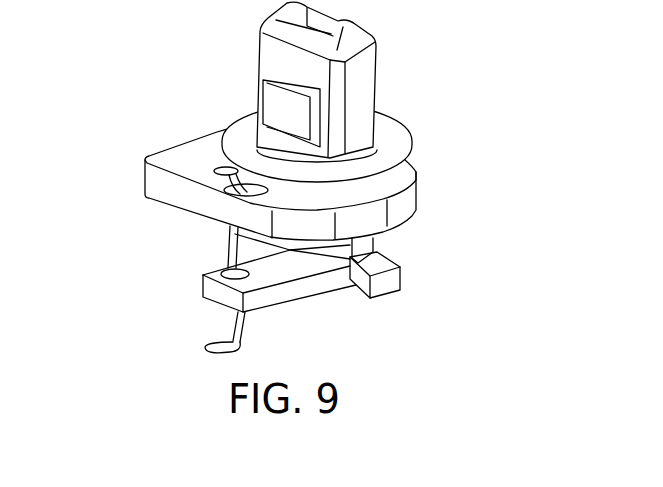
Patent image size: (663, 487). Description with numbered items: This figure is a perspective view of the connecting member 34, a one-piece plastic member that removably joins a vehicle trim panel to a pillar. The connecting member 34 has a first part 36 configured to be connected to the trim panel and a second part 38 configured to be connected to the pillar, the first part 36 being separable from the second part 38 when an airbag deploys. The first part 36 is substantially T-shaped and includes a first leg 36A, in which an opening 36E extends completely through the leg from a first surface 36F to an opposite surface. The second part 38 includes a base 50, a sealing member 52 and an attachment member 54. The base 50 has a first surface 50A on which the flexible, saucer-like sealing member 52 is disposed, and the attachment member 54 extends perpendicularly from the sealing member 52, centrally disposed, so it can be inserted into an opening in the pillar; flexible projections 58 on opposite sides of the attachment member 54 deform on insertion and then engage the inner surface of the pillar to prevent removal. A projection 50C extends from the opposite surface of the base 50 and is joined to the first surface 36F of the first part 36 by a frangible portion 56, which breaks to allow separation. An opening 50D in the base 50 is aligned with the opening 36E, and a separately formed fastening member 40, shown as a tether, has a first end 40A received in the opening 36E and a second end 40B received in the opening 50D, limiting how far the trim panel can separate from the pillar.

The connecting member 34 is at (282, 192).
The first part 36 is at (283, 302).
The first leg 36A is at (268, 307).
The opening 36E is at (224, 270).
The first surface 36F is at (286, 282).
The second part 38 is at (339, 80).
The fastening member 40 is at (190, 237).
The first end 40A is at (206, 349).
The second end 40B is at (218, 166).
The base 50 is at (282, 190).
The first surface 50A is at (172, 162).
The projection 50C is at (375, 243).
The opening 50D is at (219, 181).
The sealing member 52 is at (411, 134).
The attachment member 54 is at (366, 30).
The frangible portion 56 is at (351, 270).
The projections 58 is at (284, 104).